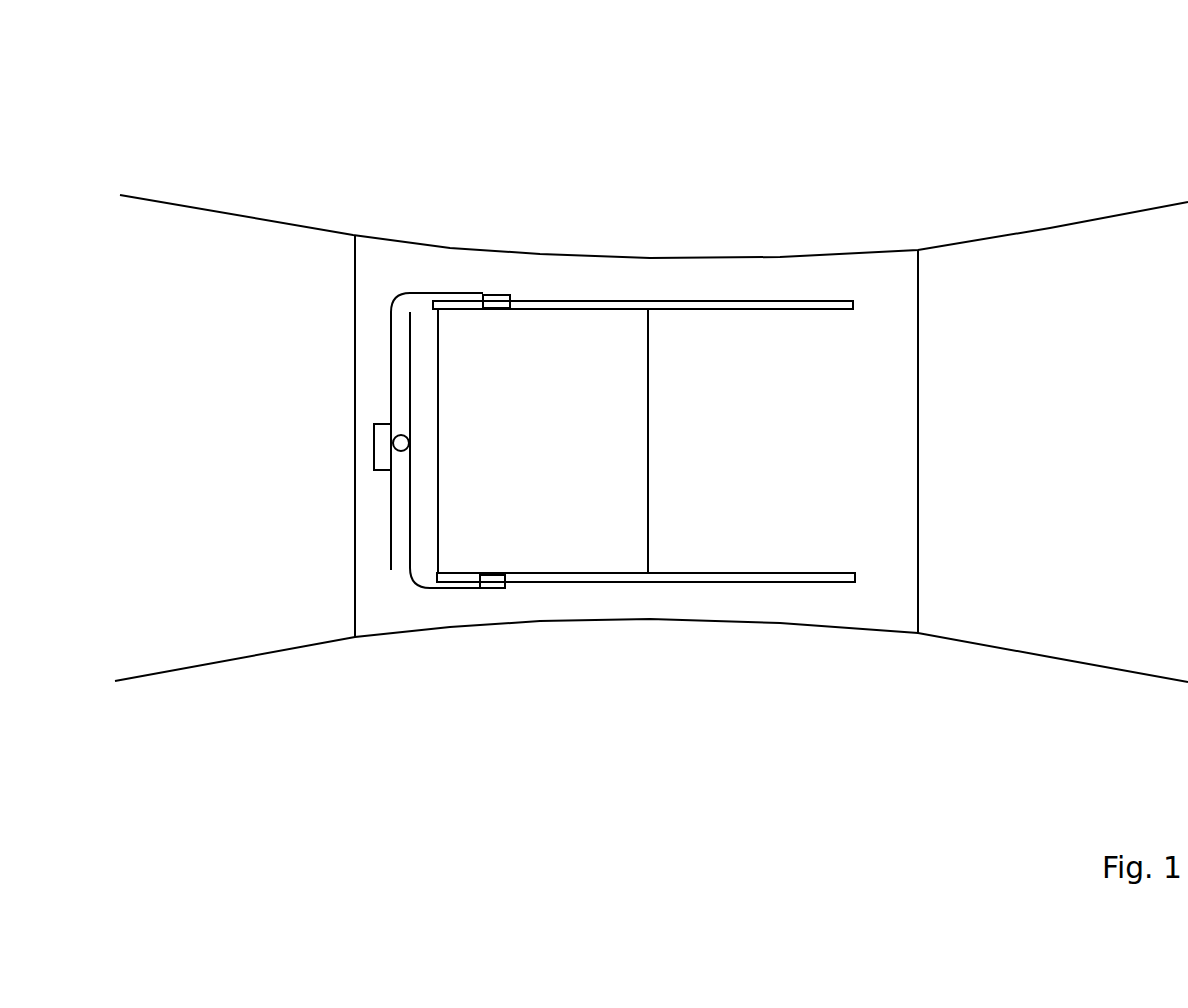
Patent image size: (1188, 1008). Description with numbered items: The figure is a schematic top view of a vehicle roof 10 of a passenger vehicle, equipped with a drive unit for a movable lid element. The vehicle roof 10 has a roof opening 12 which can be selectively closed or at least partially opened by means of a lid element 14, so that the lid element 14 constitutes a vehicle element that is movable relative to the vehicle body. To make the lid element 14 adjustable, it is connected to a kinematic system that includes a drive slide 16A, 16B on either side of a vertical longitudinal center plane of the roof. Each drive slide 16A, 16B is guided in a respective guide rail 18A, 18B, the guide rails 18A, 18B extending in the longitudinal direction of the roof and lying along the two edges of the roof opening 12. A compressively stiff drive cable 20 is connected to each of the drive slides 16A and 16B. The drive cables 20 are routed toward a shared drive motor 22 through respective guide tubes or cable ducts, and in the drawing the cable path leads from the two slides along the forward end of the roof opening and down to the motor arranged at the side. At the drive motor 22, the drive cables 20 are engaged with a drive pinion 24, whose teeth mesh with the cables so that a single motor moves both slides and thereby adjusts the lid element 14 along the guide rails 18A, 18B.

The vehicle roof 10 is at (868, 107).
The roof opening 12 is at (648, 345).
The lid element 14 is at (567, 454).
The drive slide 16A is at (497, 577).
The drive slide 16B is at (500, 305).
The guide rail 18A is at (693, 582).
The guide rail 18B is at (641, 301).
The drive cable 20 is at (427, 293).
The drive motor 22 is at (382, 438).
The drive pinion 24 is at (397, 449).